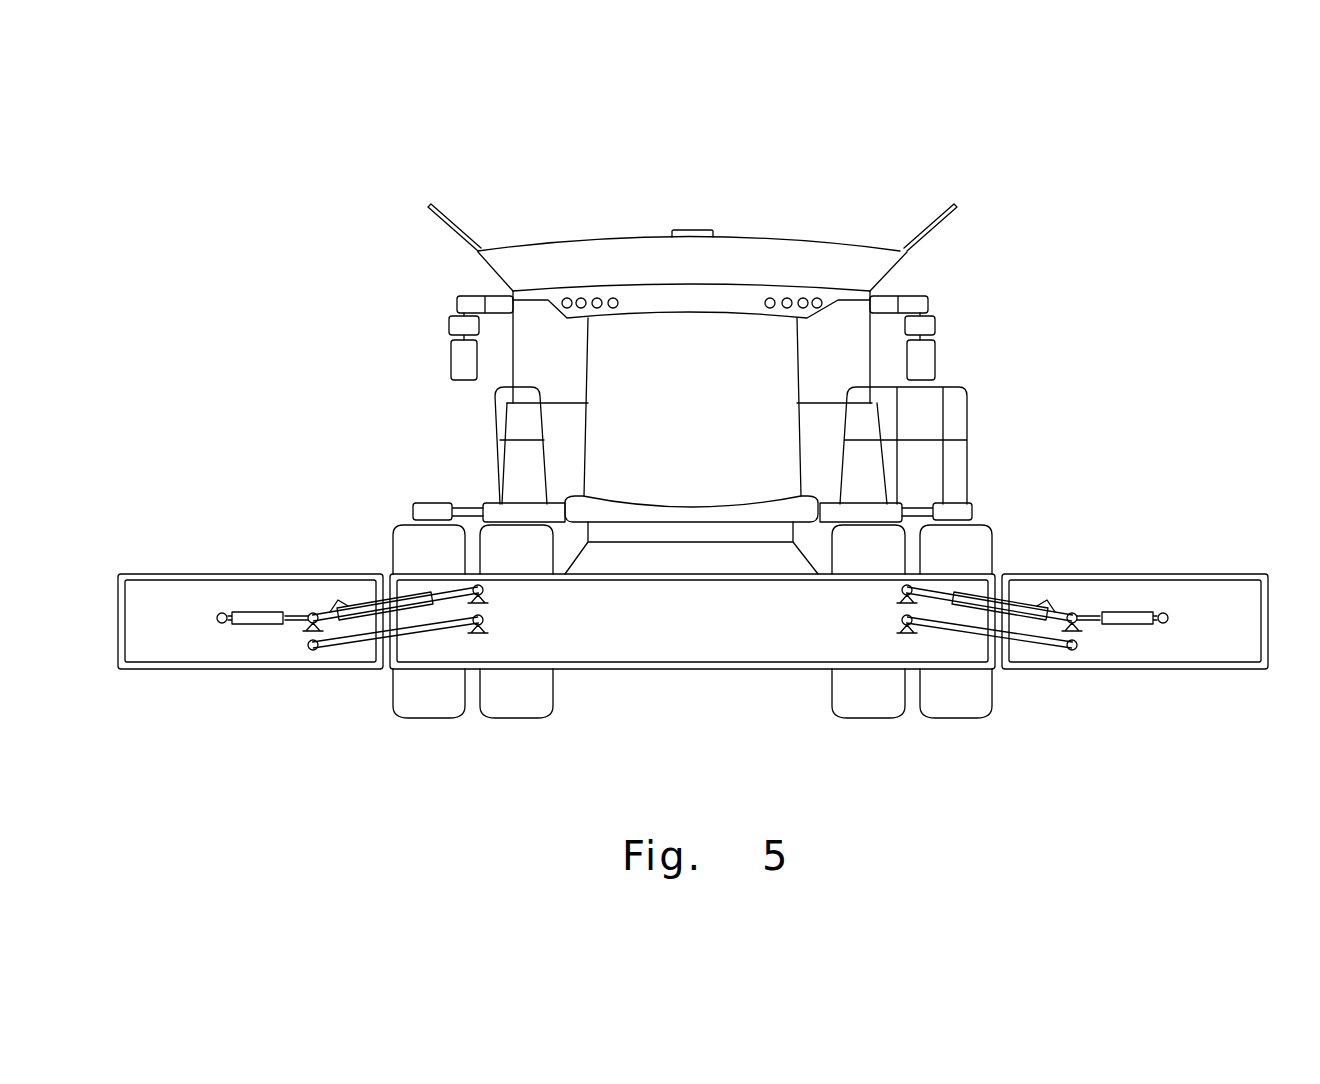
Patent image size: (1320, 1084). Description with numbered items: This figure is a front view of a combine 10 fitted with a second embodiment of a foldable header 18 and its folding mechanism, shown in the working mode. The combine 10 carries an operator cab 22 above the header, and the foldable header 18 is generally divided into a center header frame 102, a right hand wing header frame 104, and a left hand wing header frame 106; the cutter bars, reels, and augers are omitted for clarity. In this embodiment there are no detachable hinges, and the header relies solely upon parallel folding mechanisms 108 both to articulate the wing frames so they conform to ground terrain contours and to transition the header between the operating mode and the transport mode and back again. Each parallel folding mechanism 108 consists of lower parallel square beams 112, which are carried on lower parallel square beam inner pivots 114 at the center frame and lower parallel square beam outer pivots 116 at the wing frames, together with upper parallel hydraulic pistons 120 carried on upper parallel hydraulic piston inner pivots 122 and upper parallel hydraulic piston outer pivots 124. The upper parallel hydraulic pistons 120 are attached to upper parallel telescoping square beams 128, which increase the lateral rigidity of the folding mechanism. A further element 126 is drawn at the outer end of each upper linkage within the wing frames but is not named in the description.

The combine 10 is at (748, 243).
The operator cab 22 is at (602, 372).
The foldable header 18 is at (752, 628).
The center header frame 102 is at (650, 628).
The right hand wing header frame 104 is at (150, 653).
The left hand wing header frame 106 is at (1230, 650).
The parallel folding mechanisms 108 is at (423, 632).
The lower parallel square beams 112 is at (363, 647).
The lower parallel square beam inner pivots 114 is at (484, 619).
The lower parallel square beam outer pivots 116 is at (308, 647).
The upper parallel hydraulic pistons 120 is at (413, 595).
The upper parallel hydraulic piston inner pivots 122 is at (484, 589).
The upper parallel hydraulic piston outer pivots 124 is at (312, 613).
The damper 126 is at (247, 612).
The upper parallel telescoping square beams 128 is at (353, 605).